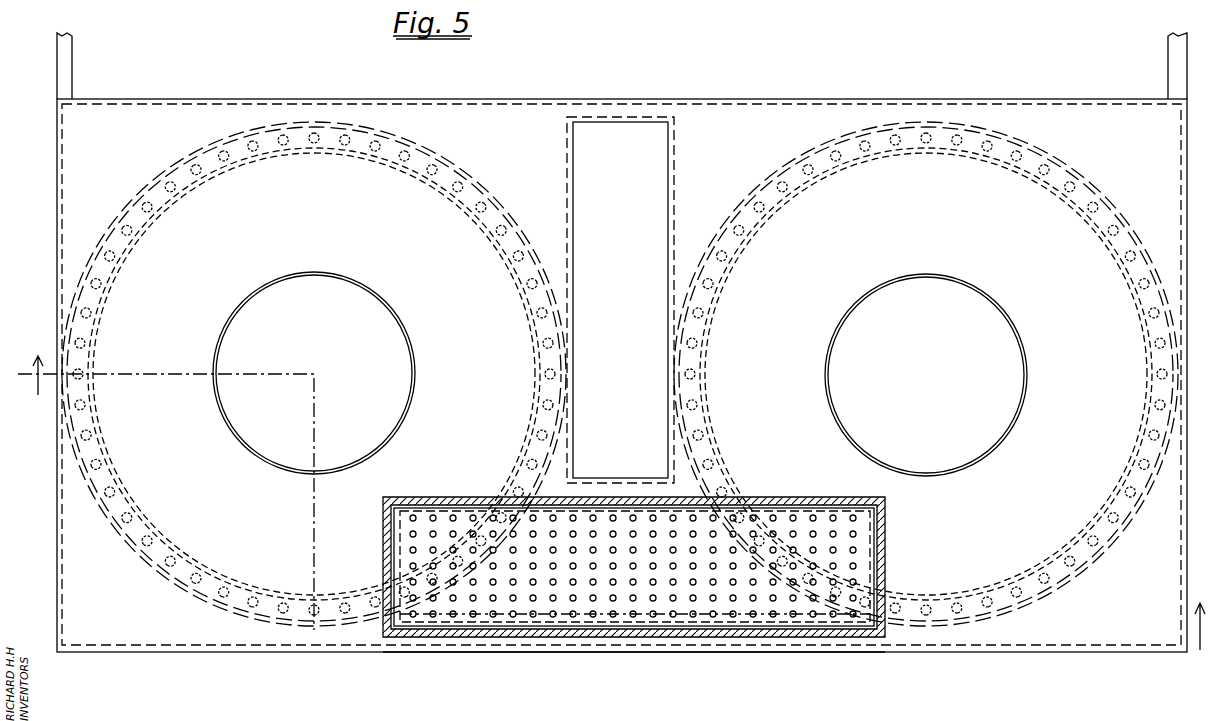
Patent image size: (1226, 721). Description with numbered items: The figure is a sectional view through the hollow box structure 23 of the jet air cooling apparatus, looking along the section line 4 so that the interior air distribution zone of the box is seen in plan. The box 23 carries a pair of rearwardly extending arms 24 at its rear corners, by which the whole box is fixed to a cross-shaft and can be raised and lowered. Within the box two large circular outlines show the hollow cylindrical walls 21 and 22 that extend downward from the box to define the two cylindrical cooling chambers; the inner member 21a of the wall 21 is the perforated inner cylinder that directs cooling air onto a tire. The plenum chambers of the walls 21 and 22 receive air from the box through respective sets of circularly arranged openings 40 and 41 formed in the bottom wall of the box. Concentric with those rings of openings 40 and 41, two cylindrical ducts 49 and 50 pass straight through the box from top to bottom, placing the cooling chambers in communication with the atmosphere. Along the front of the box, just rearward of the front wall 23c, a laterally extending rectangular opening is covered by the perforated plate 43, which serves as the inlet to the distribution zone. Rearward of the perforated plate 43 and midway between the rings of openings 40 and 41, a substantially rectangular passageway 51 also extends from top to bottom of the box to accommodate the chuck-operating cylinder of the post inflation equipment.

The section line 4 is at (612, 518).
The hollow cylindrical wall 21 is at (314, 374).
The inner member of cooling chamber-defining wall 21a is at (136, 502).
The hollow cylindrical wall 22 is at (926, 374).
The hollow box structure 23 is at (57, 203).
The front wall of the box 23c is at (393, 652).
The rearwardly extending arms 24 is at (68, 75).
The circularly arranged openings 40 is at (122, 255).
The circularly arranged openings 41 is at (700, 346).
The perforated plate 43 is at (600, 618).
The cylindrical duct 49 is at (277, 283).
The cylindrical duct 50 is at (827, 363).
The substantially rectangular passageway 51 is at (574, 195).